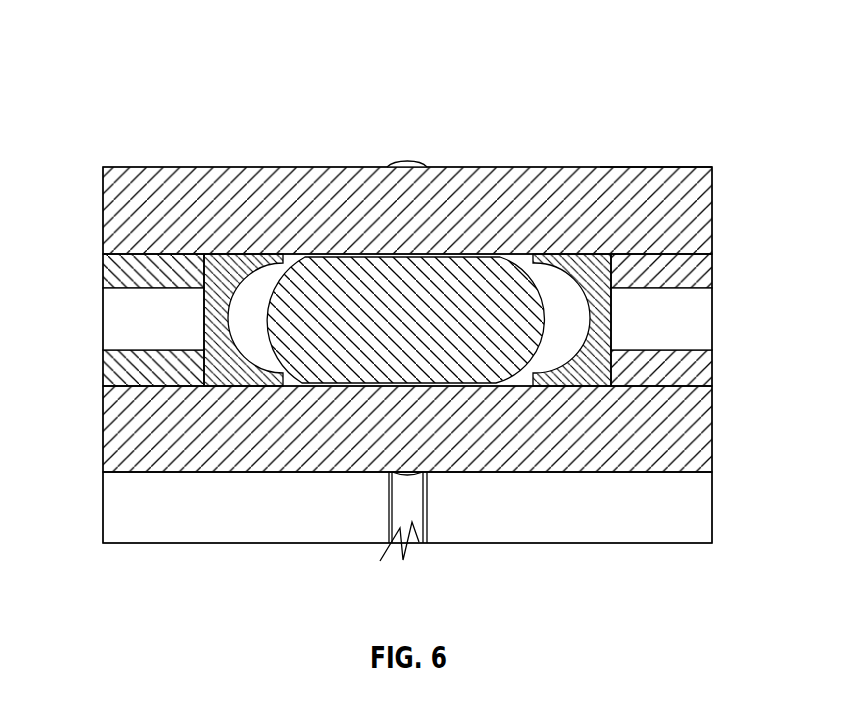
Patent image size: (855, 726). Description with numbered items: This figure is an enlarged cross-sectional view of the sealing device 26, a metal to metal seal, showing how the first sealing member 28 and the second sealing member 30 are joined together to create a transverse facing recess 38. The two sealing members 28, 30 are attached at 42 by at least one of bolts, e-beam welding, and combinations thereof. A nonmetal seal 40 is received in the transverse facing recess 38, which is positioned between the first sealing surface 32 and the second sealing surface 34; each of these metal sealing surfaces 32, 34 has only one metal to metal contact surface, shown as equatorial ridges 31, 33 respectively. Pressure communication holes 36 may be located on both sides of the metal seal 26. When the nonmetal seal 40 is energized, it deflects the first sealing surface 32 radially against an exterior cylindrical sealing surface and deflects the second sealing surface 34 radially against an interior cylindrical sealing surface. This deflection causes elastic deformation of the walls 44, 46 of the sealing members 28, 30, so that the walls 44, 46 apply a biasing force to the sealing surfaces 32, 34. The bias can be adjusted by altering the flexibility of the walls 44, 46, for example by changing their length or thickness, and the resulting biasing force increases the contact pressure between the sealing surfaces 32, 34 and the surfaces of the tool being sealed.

The sealing device 26 is at (102, 54).
The first sealing member 28 is at (109, 273).
The second sealing member 30 is at (680, 400).
The equatorial ridge 31 is at (407, 160).
The first sealing surface 32 is at (595, 167).
The equatorial ridge 33 is at (396, 537).
The second sealing surface 34 is at (653, 473).
The pressure communication holes 36 is at (712, 316).
The transverse facing recess 38 is at (556, 283).
The nonmetal seal 40 is at (457, 370).
The attachment 42 is at (145, 254).
The wall 44 is at (325, 190).
The wall 46 is at (118, 429).